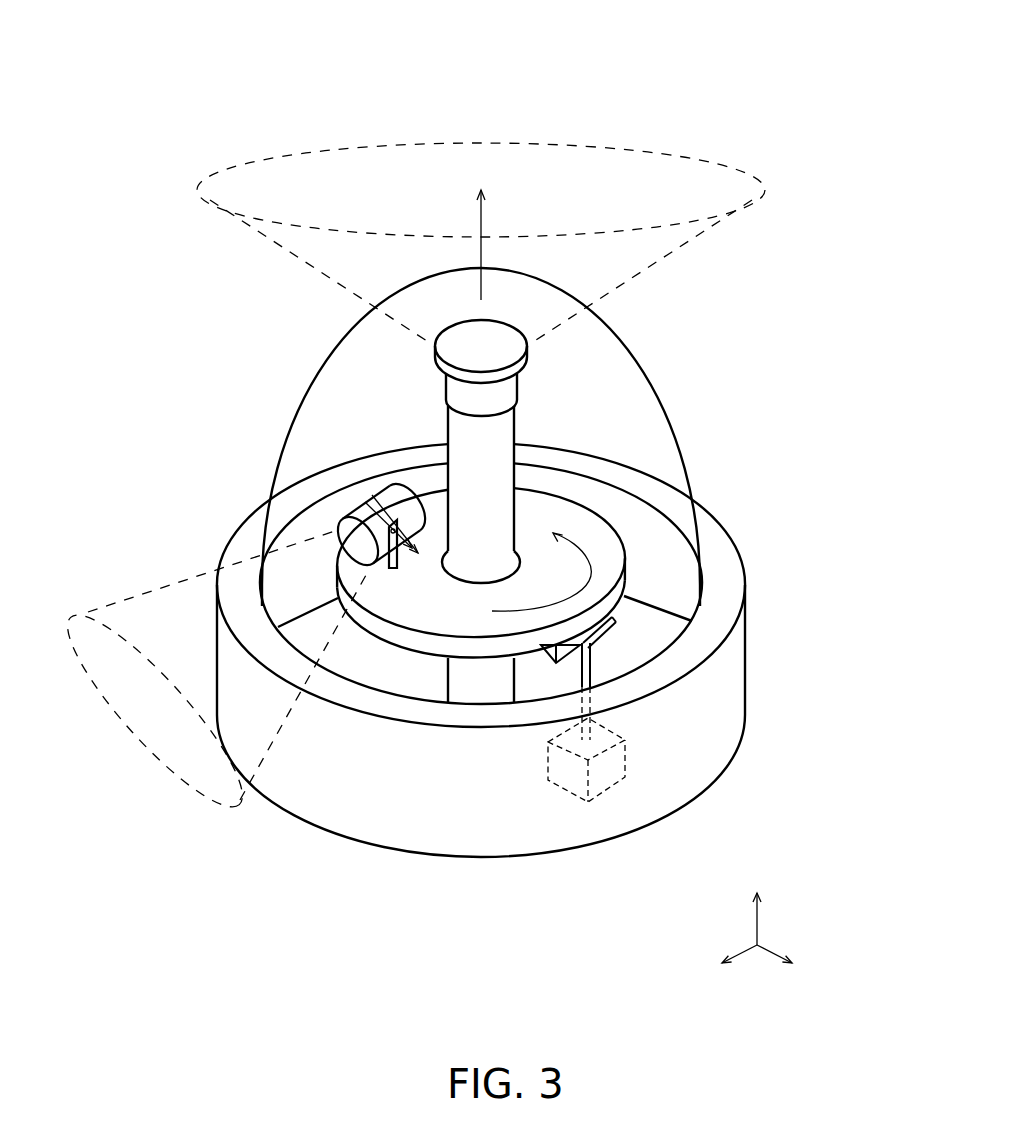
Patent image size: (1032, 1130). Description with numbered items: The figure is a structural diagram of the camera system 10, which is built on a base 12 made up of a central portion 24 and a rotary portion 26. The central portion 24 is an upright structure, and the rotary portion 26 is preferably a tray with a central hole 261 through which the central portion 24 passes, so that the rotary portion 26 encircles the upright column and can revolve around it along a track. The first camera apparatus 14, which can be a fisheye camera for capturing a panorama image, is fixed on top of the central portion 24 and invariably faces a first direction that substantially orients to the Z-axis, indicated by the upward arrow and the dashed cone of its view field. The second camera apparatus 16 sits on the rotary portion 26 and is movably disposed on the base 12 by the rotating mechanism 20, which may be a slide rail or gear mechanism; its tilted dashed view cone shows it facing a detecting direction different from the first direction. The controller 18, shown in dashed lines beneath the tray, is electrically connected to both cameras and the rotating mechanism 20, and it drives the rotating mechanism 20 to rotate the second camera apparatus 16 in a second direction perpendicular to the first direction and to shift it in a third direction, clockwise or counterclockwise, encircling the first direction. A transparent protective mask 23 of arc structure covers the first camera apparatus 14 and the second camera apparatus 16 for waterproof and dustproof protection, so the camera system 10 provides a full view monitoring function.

The camera system 10 is at (759, 66).
The base 12 is at (322, 808).
The first camera apparatus 14 is at (523, 351).
The second camera apparatus 16 is at (383, 520).
The controller 18 is at (610, 787).
The rotating mechanism 20 is at (603, 632).
The protective mask 23 is at (643, 397).
The central portion 24 is at (500, 428).
The rotary portion 26 is at (600, 552).
The central hole 261 is at (517, 555).